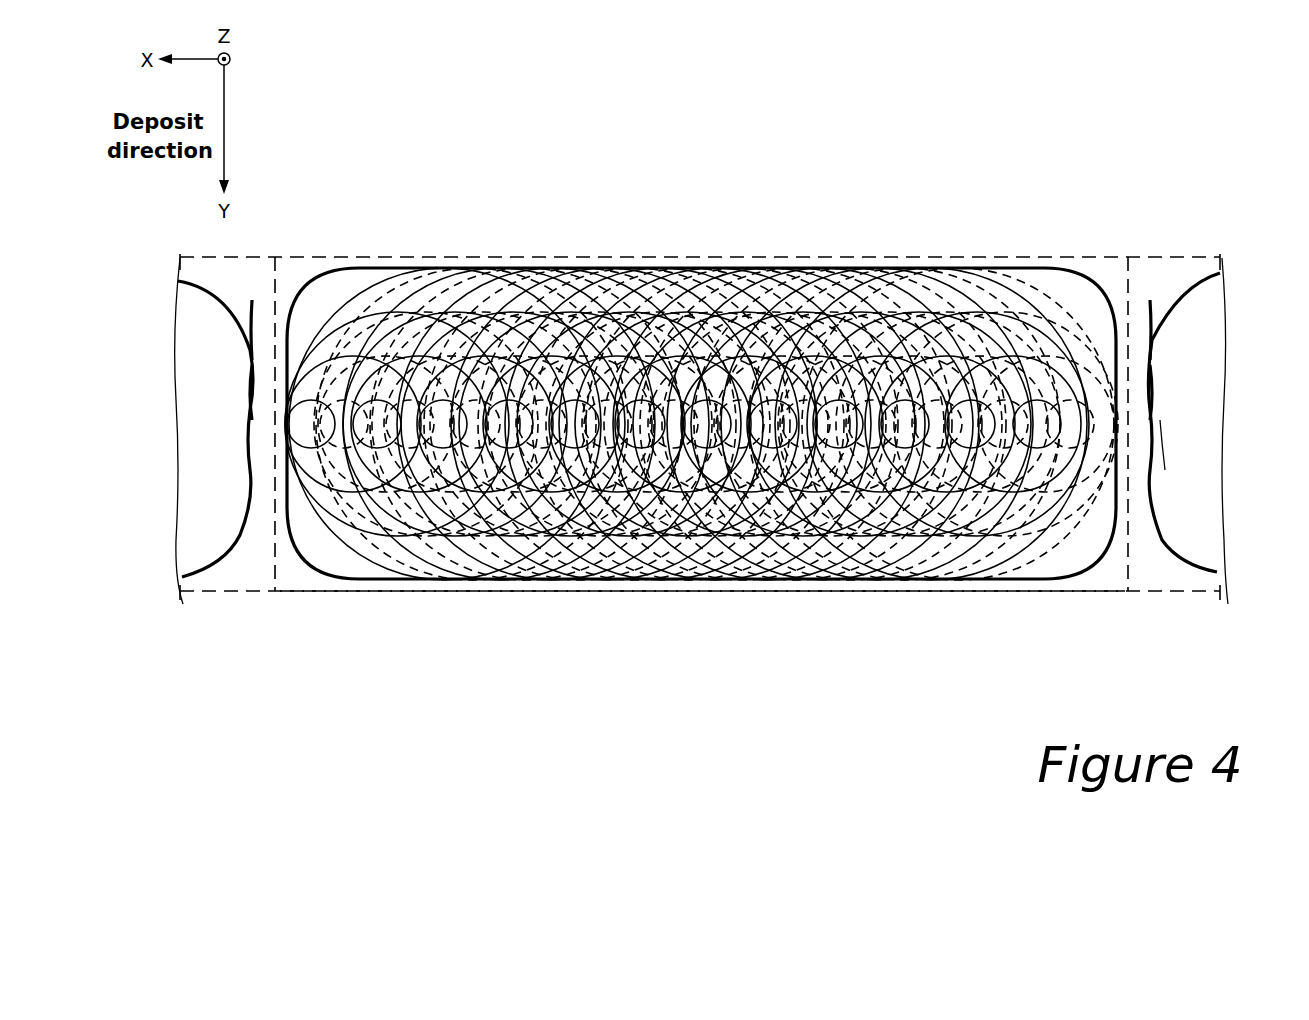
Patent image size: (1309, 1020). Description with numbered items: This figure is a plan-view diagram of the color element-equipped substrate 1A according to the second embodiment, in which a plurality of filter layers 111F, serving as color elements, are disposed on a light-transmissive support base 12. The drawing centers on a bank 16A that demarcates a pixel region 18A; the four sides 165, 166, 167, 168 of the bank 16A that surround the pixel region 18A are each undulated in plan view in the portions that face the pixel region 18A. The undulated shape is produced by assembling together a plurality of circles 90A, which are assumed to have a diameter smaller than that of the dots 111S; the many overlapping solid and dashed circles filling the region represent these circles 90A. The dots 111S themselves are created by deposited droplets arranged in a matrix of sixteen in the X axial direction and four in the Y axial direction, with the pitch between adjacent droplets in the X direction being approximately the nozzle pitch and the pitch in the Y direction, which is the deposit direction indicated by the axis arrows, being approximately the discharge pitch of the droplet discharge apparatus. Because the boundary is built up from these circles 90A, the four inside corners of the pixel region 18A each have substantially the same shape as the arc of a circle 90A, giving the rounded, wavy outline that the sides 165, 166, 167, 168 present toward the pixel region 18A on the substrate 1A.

The color element-equipped substrate 1A is at (1066, 124).
The light-transmissive support base 12 is at (1192, 450).
The bank 16A is at (894, 607).
The pixel region 18A is at (203, 553).
The circle 90A is at (364, 270).
The filter layer 111F is at (190, 474).
The dot 111S is at (348, 268).
The side of the bank 165 is at (577, 268).
The side of the bank 166 is at (250, 402).
The side of the bank 167 is at (730, 578).
The side of the bank 168 is at (309, 318).